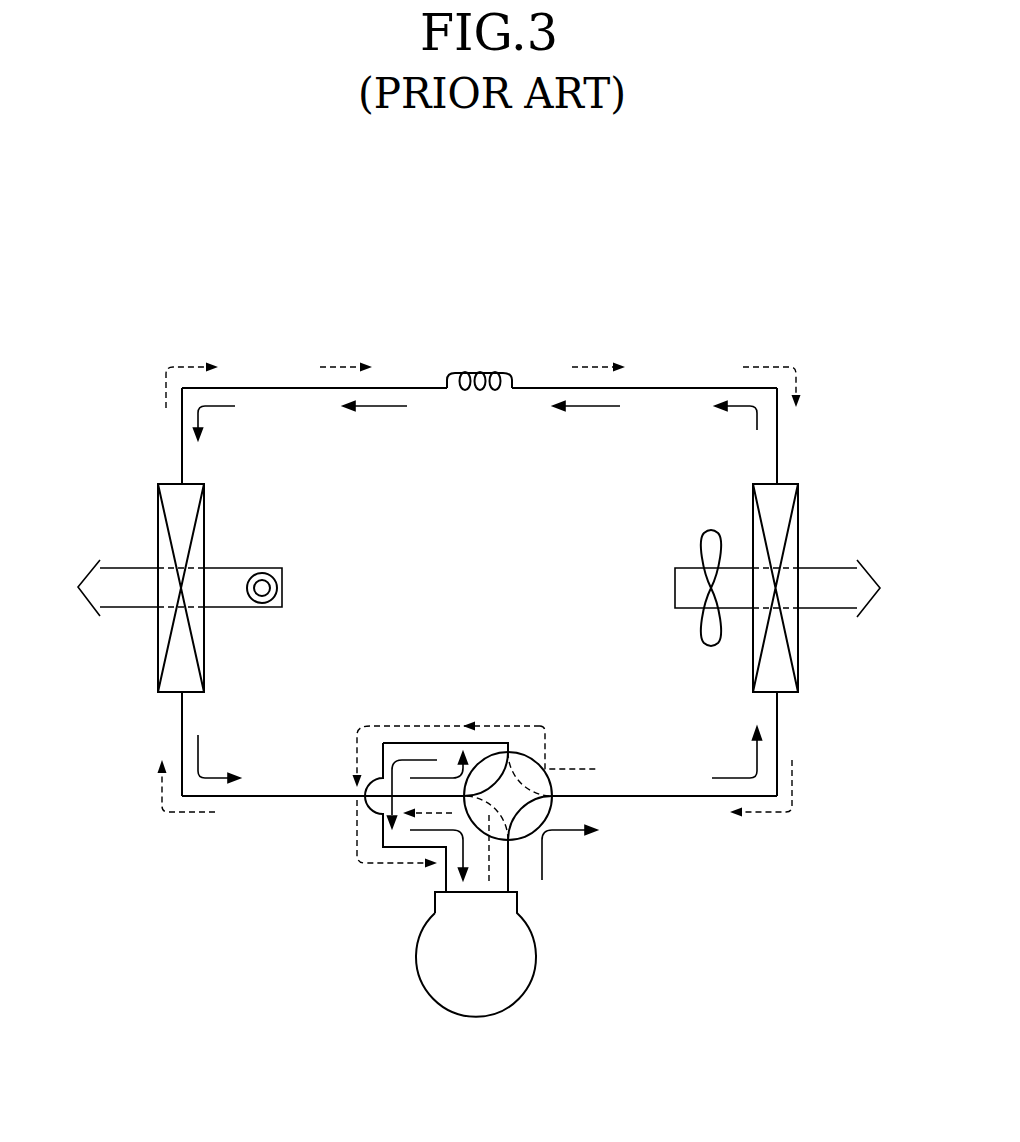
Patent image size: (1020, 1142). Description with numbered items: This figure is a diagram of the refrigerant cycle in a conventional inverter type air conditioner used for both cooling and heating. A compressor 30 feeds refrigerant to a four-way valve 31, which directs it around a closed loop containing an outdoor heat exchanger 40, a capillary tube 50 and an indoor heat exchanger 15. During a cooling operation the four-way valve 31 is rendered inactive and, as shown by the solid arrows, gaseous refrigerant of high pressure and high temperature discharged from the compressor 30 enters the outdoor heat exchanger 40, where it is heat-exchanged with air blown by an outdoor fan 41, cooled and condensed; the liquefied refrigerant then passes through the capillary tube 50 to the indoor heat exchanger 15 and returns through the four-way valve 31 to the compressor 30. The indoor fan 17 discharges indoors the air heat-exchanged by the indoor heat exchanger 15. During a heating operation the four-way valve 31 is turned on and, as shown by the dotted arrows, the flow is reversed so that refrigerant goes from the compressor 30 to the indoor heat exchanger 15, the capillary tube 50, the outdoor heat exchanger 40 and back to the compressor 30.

The indoor heat exchanger 15 is at (206, 528).
The indoor fan 17 is at (283, 612).
The compressor 30 is at (538, 956).
The four-way valve 31 is at (528, 755).
The outdoor heat exchanger 40 is at (800, 523).
The outdoor fan 41 is at (703, 556).
The capillary tube 50 is at (473, 373).